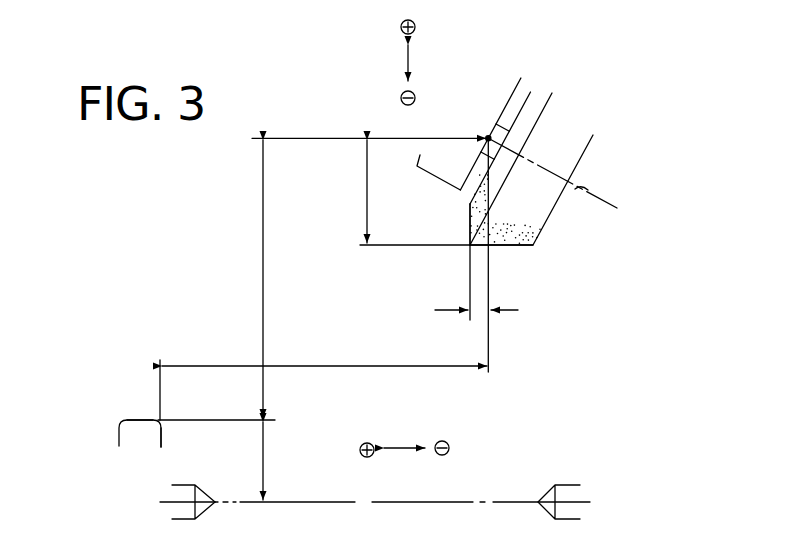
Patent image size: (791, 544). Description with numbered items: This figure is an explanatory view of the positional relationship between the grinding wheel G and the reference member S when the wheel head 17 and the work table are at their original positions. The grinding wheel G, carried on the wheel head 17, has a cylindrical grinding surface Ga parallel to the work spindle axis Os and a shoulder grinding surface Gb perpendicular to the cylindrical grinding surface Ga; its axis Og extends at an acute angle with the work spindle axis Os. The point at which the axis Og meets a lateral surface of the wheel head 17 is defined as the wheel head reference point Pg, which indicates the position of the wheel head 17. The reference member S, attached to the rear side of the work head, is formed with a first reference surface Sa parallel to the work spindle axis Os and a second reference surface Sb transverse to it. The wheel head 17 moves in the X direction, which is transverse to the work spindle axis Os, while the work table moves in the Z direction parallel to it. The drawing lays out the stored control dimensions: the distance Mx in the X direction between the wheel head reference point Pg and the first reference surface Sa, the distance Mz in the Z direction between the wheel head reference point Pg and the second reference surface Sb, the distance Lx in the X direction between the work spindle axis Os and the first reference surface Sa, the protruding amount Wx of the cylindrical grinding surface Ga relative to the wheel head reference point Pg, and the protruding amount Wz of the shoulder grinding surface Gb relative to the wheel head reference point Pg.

The wheel head 17 is at (509, 70).
The wheel head reference point Pg is at (488, 137).
The grinding wheel G is at (577, 151).
The cylindrical grinding surface Ga is at (526, 246).
The shoulder grinding surface Gb is at (470, 218).
The axis of the grinding wheel Og is at (569, 182).
The protruding amount in the X-axis direction Wx is at (413, 192).
The distance in the X-axis direction Mx is at (225, 280).
The distance in the X-axis direction Lx is at (270, 461).
The distance in the Z-axis direction Mz is at (323, 385).
The protruding amount in the Z-axis direction Wz is at (498, 284).
The X-axis direction X is at (400, 62).
The Z-axis direction Z is at (404, 438).
The reference member S is at (127, 438).
The first reference surface Sa is at (132, 420).
The second reference surface Sb is at (163, 434).
The work spindle axis Os is at (500, 502).